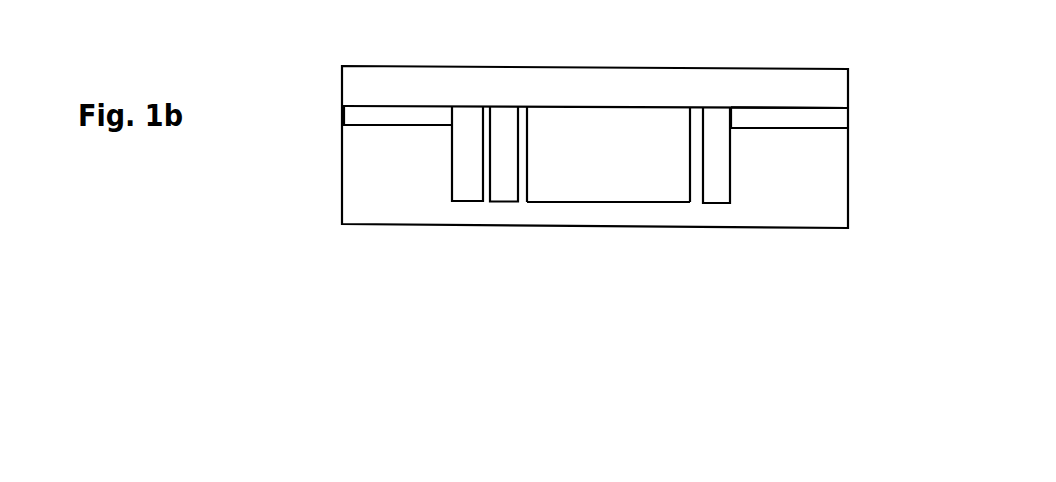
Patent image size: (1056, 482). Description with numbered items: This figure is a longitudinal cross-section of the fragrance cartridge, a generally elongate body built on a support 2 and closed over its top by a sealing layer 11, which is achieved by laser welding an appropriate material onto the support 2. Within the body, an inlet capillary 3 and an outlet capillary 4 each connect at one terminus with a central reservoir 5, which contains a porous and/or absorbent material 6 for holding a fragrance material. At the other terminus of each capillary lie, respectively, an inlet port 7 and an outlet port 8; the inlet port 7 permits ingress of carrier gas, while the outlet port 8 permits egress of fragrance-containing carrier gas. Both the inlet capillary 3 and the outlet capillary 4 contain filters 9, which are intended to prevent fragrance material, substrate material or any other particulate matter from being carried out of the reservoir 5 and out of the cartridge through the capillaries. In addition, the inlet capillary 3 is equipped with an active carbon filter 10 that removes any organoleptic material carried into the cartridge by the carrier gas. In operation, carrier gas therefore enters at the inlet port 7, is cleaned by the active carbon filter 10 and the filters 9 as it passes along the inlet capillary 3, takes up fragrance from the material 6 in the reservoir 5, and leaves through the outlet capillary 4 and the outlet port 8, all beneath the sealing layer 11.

The support 2 is at (850, 193).
The inlet capillary 3 is at (363, 129).
The outlet capillary 4 is at (802, 107).
The reservoir 5 is at (611, 216).
The porous and/or absorbent material 6 is at (580, 186).
The inlet port 7 is at (315, 110).
The outlet port 8 is at (862, 118).
The filters 9 is at (508, 173).
The active carbon filter 10 is at (447, 176).
The sealing layer 11 is at (822, 66).